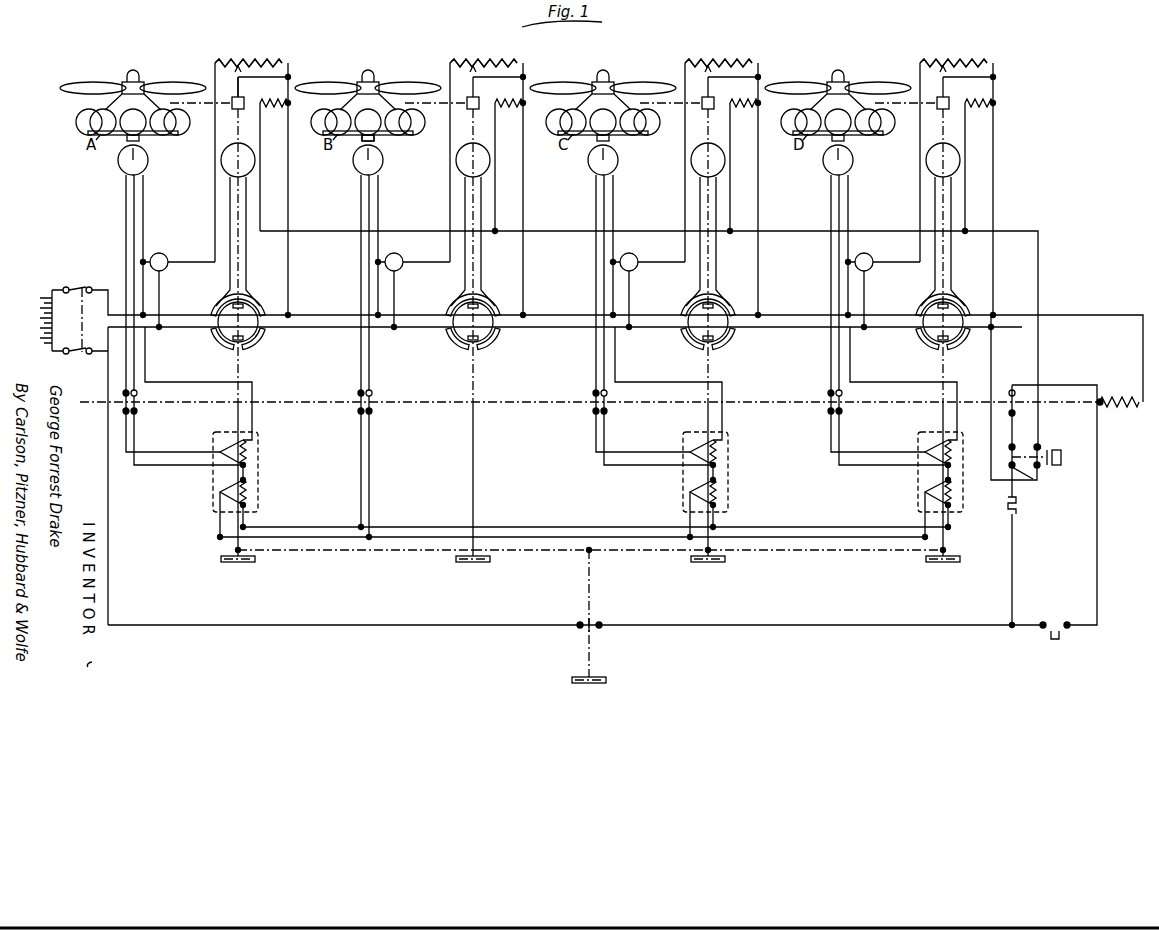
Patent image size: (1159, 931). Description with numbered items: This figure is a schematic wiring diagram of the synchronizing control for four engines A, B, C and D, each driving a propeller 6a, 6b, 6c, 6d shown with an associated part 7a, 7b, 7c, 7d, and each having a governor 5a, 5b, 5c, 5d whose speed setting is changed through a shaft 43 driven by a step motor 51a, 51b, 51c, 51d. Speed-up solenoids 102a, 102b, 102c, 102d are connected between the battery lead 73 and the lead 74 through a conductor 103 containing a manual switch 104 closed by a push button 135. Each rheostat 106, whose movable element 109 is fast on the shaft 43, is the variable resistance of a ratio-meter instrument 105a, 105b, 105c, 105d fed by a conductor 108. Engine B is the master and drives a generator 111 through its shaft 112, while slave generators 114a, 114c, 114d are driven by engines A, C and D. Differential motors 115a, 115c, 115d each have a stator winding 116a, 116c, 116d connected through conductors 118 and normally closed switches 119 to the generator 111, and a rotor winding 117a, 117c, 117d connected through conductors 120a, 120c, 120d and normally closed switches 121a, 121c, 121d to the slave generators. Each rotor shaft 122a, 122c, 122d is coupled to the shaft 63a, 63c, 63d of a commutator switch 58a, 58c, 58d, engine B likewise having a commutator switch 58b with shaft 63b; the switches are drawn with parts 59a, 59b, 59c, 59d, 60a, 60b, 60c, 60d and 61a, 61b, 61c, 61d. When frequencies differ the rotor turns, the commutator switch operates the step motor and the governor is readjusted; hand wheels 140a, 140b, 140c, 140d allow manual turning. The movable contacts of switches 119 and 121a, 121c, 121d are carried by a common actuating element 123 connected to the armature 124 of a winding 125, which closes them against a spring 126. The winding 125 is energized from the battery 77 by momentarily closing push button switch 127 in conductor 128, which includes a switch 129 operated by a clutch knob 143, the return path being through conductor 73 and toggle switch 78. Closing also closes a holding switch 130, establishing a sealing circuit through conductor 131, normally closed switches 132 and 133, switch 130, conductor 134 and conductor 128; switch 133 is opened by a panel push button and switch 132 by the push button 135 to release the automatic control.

The propeller 6a is at (107, 85).
The pitch control of engine A 7a is at (139, 77).
The propeller 6b is at (368, 73).
The pitch control of engine B 7b is at (378, 66).
The propeller 6c is at (603, 73).
The pitch control of engine C 7c is at (614, 66).
The propeller 6d is at (838, 73).
The pitch control of engine D 7d is at (849, 65).
The rheostat 106 is at (250, 54).
The movable element of rheostat 109 is at (594, 71).
The shaft 43 is at (253, 88).
The governor 5a is at (234, 110).
The governor 5b is at (465, 114).
The governor 5c is at (700, 114).
The governor 5d is at (935, 114).
The solenoid 102a is at (291, 107).
The solenoid 102b is at (535, 104).
The solenoid 102c is at (769, 104).
The solenoid 102d is at (1005, 104).
The step motor 51a is at (216, 163).
The step motor 51b is at (451, 160).
The step motor 51c is at (686, 160).
The step motor 51d is at (921, 160).
The generator 114a is at (122, 168).
The generator 114c is at (582, 168).
The generator 114d is at (817, 168).
The generator 111 is at (352, 167).
The shaft 112 is at (349, 153).
The conductor 108 is at (163, 298).
The instrument 105a is at (164, 254).
The instrument 105b is at (414, 247).
The instrument 105c is at (649, 247).
The instrument 105d is at (884, 247).
The commutator switch 58a is at (253, 294).
The commutator switch 58b is at (484, 259).
The commutator switch 58c is at (718, 259).
The commutator switch 58d is at (954, 259).
The motor field A 59a is at (225, 300).
The motor field B 59b is at (467, 295).
The motor field C 59c is at (702, 295).
The motor field D 59d is at (936, 295).
The field pole A 60a is at (216, 342).
The field pole B 60b is at (443, 343).
The field pole C 60c is at (678, 343).
The field pole D 60d is at (913, 343).
The field pole A 61a is at (260, 342).
The field pole B 61b is at (505, 343).
The field pole C 61c is at (739, 343).
The field pole D 61d is at (973, 343).
The shaft of commutator switch 63a is at (243, 369).
The shaft of commutator switch 63b is at (496, 466).
The shaft of commutator switch 63c is at (727, 457).
The shaft of commutator switch 63d is at (926, 457).
The hand wheel 140a is at (230, 564).
The hand wheel 140b is at (472, 571).
The hand wheel 140c is at (714, 571).
The hand wheel 140d is at (952, 571).
The differential motor 115a is at (210, 484).
The differential motor 115c is at (683, 472).
The differential motor 115d is at (918, 472).
The rotor winding 117a is at (254, 450).
The rotor winding 117c is at (690, 448).
The rotor winding 117d is at (925, 441).
The stator winding 116a is at (255, 491).
The stator winding 116c is at (732, 493).
The stator winding 116d is at (914, 493).
The conductor 120a is at (136, 431).
The conductor 120c is at (652, 438).
The conductor 120d is at (889, 438).
The switch 121a is at (140, 397).
The switch 121c is at (577, 392).
The switch 121d is at (813, 399).
The switch 119 is at (387, 463).
The rotor shaft 122a is at (236, 549).
The rotor shaft 122c is at (624, 531).
The rotor shaft 122d is at (850, 542).
The conductor 118 is at (315, 530).
The actuating element 123 is at (440, 407).
The spring 126 is at (92, 476).
The conductor 128 is at (465, 627).
The switch 129 is at (600, 621).
The knob 143 is at (592, 687).
The push button switch 127 is at (1044, 635).
The current source 77 is at (26, 319).
The toggle switch 78 is at (74, 286).
The battery lead 73 is at (91, 287).
The lead 74 is at (92, 357).
The conductor 103 is at (1040, 265).
The holding switch 130 is at (1011, 390).
The conductor 131 is at (1063, 386).
The winding 125 is at (1115, 408).
The armature 124 is at (1101, 410).
The switch 104 is at (1049, 448).
The push button 135 is at (1061, 462).
The switch 132 is at (1032, 483).
The switch 133 is at (1026, 505).
The conductor 134 is at (1023, 525).